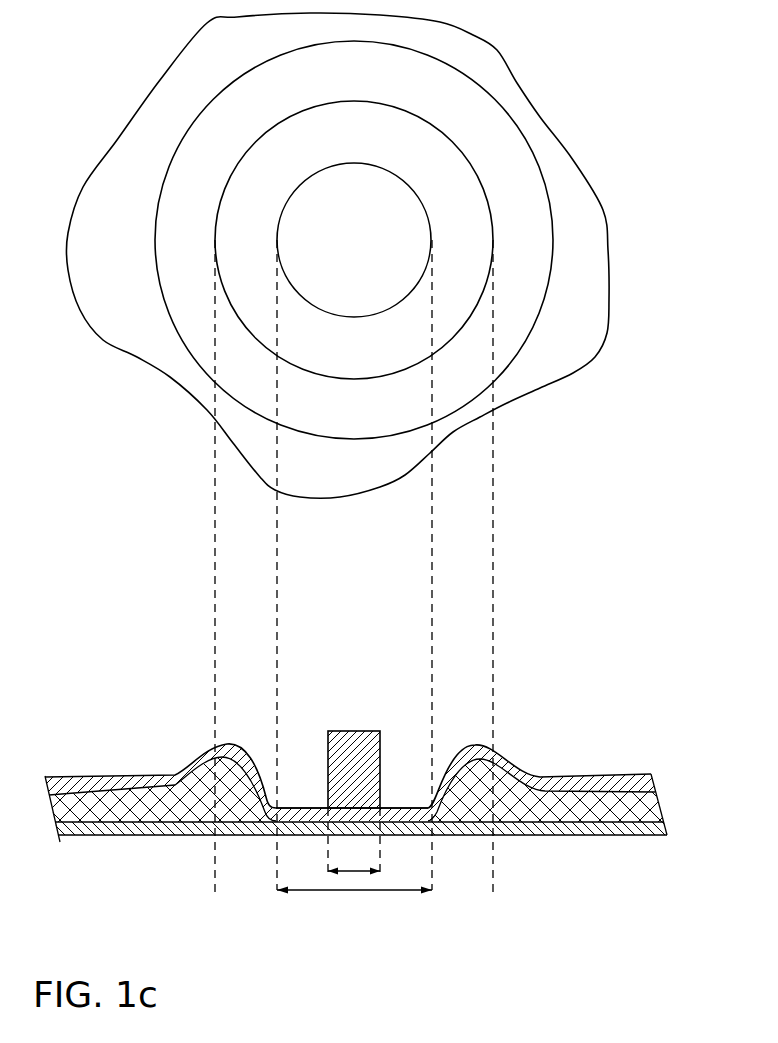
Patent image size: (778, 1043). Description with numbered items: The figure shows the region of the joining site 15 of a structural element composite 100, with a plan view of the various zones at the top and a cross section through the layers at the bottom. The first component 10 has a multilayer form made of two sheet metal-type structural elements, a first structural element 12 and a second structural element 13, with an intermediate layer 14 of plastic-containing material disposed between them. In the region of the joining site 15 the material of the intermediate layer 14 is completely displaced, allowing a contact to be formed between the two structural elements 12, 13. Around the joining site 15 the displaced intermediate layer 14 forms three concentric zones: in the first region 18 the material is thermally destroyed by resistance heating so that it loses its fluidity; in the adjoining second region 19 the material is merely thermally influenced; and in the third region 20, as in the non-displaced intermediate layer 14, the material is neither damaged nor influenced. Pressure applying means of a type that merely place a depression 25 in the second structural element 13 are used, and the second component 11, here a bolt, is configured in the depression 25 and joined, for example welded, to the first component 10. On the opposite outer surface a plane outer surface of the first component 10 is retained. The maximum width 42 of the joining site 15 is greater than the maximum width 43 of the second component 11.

The first component 10 is at (100, 828).
The second component 11 is at (357, 737).
The first structural element of the first component 12 is at (587, 828).
The second structural element of the first component 13 is at (593, 784).
The intermediate layer 14 is at (622, 810).
The joining site 15 is at (406, 202).
The first region of the displaced intermediate layer 18 is at (474, 232).
The second region of the displaced intermediate layer 19 is at (543, 258).
The third region of the displaced intermediate layer 20 is at (595, 293).
The depression 25 is at (292, 763).
The maximum width of the joining site 42 is at (367, 890).
The maximum width of the second component 43 is at (351, 871).
The structural element composite 100 is at (136, 641).